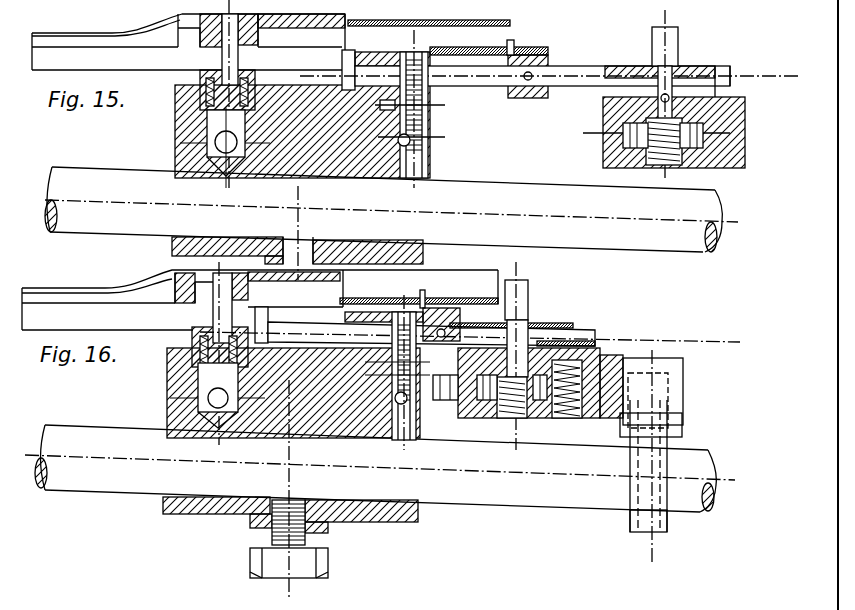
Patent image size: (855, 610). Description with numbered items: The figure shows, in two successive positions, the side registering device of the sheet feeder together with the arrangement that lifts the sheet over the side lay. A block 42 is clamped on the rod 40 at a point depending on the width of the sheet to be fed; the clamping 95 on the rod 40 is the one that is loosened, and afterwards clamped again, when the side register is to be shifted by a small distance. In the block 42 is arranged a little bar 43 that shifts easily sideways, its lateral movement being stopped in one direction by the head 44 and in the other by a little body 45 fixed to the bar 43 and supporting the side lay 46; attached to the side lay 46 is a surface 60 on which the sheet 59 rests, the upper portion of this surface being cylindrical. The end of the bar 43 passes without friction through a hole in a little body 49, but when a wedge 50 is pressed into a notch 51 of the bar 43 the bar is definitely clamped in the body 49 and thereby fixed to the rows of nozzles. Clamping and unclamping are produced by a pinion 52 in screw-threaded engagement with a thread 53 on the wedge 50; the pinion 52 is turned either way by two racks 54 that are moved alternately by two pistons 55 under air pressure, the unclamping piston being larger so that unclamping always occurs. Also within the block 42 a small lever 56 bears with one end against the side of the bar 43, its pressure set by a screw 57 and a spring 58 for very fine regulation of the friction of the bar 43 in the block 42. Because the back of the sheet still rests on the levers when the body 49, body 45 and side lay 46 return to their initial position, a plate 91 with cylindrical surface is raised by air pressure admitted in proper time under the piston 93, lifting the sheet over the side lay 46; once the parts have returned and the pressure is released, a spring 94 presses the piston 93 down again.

In FIG. 15, the rod 40 is at (625, 247).
In FIG. 16, the rod 40 is at (482, 498).
In FIG. 15, the block 42 is at (325, 168).
In FIG. 16, the block 42 is at (232, 508).
In FIG. 15, the bar 43 is at (466, 78).
In FIG. 16, the bar 43 is at (298, 325).
In FIG. 15, the head 44 is at (355, 64).
In FIG. 16, the head 44 is at (283, 300).
In FIG. 15, the body 45 is at (528, 86).
In FIG. 16, the body 45 is at (458, 314).
In FIG. 15, the side lay 46 is at (512, 44).
In FIG. 16, the side lay 46 is at (425, 305).
In FIG. 15, the body 49 is at (605, 135).
In FIG. 15, the wedge 50 is at (668, 95).
In FIG. 16, the wedge 50 is at (524, 348).
In FIG. 15, the notch 51 is at (590, 86).
In FIG. 16, the notch 51 is at (595, 338).
In FIG. 15, the pinion 52 is at (686, 148).
In FIG. 16, the pinion 52 is at (570, 455).
In FIG. 15, the thread 53 is at (662, 160).
In FIG. 16, the thread 53 is at (511, 409).
In FIG. 16, the racks 54 is at (441, 403).
In FIG. 16, the pistons 55 is at (565, 408).
In FIG. 15, the lever 56 is at (420, 122).
In FIG. 16, the lever 56 is at (392, 378).
In FIG. 15, the screw 57 is at (410, 140).
In FIG. 15, the spring 58 is at (438, 148).
In FIG. 16, the spring 58 is at (504, 408).
In FIG. 15, the sheet 59 is at (418, 15).
In FIG. 15, the surface 60 is at (470, 47).
In FIG. 16, the surface 60 is at (380, 297).
In FIG. 15, the plate 91 is at (200, 30).
In FIG. 16, the plate 91 is at (193, 292).
In FIG. 15, the piston 93 is at (197, 115).
In FIG. 16, the piston 93 is at (217, 395).
In FIG. 15, the spring 94 is at (245, 83).
In FIG. 16, the spring 94 is at (200, 327).
In FIG. 16, the clamping 95 is at (306, 522).